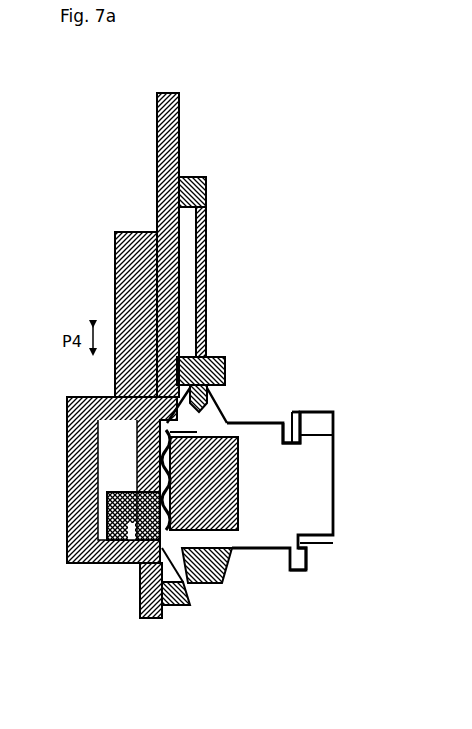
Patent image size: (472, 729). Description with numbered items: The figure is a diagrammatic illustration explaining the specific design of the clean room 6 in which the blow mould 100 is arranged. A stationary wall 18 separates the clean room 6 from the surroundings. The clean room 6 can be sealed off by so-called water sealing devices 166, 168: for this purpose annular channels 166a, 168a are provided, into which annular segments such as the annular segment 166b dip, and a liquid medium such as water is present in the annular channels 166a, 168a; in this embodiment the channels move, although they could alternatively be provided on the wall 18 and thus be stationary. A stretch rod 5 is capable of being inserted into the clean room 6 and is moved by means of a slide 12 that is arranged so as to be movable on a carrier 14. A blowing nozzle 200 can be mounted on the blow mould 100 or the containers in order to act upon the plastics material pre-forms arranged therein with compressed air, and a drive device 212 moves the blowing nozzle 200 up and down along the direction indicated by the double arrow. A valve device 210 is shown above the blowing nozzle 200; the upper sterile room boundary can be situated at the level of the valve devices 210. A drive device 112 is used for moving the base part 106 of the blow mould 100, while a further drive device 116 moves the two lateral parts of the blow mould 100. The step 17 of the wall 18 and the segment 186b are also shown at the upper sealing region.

The carrier 14 is at (178, 143).
The slide 12 is at (206, 205).
The drive device 212 is at (90, 300).
The stretch rod 5 is at (206, 333).
The valve device 210 is at (225, 372).
The blowing nozzle 200 is at (215, 417).
The housing step 17 is at (286, 412).
The housing tab 186b is at (325, 411).
The water sealing device 168 is at (334, 432).
The annular channel 168a is at (291, 443).
The wall 18 is at (334, 470).
The clean room 6 is at (300, 503).
The blow mould 100 is at (238, 492).
The drive device 116 is at (118, 563).
The drive device 112 is at (192, 605).
The base part 106 is at (223, 583).
The water sealing device 166 is at (310, 557).
The annular channel 166a is at (300, 572).
The annular segment 166b is at (312, 550).